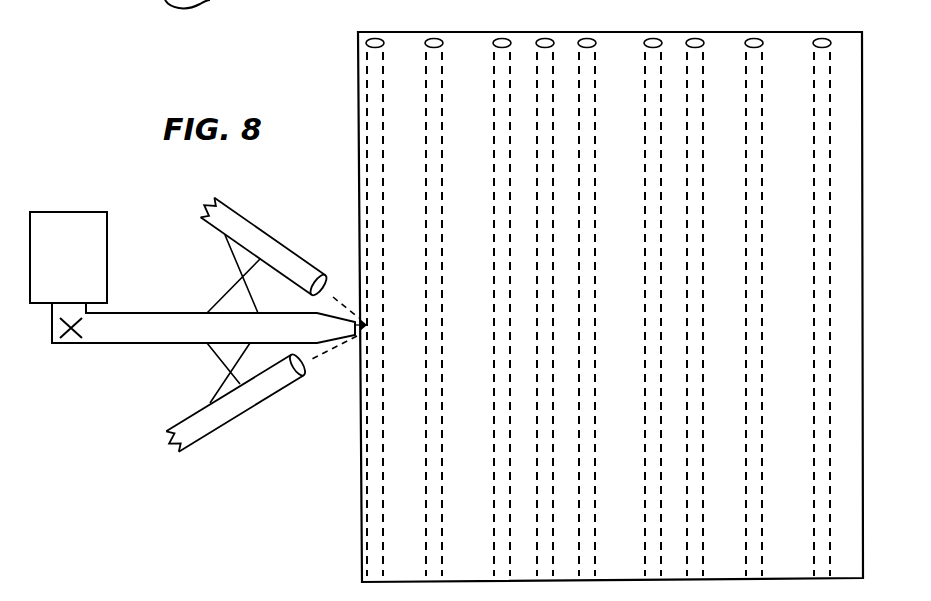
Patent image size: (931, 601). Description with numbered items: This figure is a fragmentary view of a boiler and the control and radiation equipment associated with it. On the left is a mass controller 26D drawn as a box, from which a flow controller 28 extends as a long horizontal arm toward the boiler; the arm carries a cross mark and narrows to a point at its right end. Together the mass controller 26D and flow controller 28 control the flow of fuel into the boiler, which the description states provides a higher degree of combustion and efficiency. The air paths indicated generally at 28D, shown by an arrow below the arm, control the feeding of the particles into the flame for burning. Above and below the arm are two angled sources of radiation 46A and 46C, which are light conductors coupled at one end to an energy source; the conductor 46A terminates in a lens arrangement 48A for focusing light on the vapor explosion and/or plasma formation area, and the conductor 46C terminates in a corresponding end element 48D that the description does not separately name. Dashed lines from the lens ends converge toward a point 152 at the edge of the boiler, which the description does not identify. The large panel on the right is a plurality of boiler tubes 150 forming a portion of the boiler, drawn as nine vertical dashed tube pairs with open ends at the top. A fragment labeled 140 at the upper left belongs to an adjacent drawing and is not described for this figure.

The fragment of adjacent figure 140 is at (280, 0).
The boiler tubes 150 is at (570, 22).
The mass controller 26D is at (83, 220).
The flow controller 28 is at (170, 324).
The air paths 28D is at (205, 374).
The source of radiation 46A is at (240, 213).
The lens arrangement 48A is at (332, 284).
The source of radiation 46C is at (240, 403).
The detector end 48D is at (302, 358).
The impingement point 152 is at (355, 299).